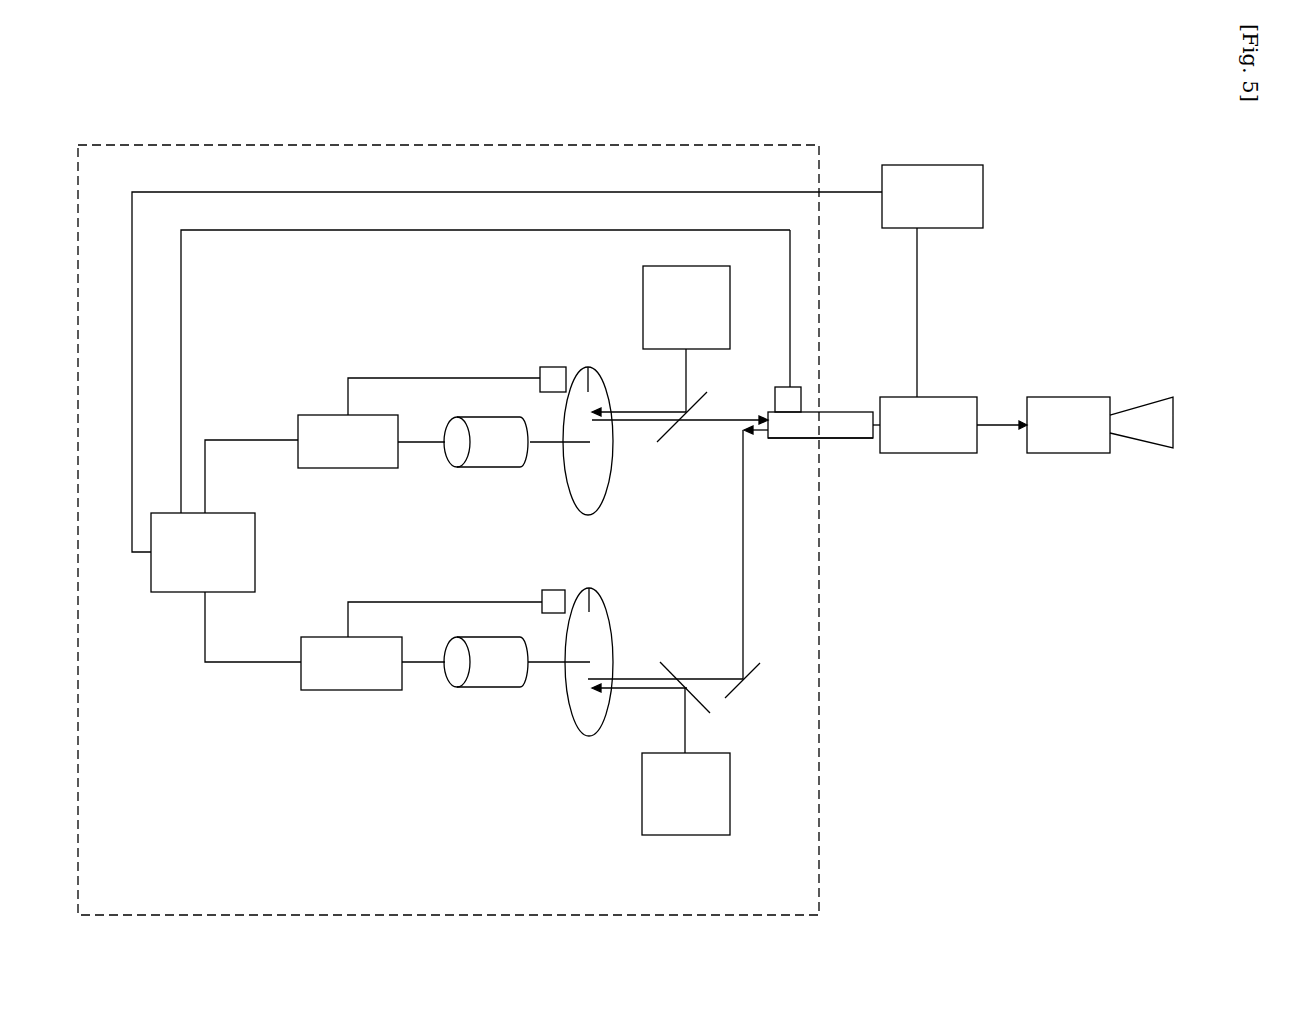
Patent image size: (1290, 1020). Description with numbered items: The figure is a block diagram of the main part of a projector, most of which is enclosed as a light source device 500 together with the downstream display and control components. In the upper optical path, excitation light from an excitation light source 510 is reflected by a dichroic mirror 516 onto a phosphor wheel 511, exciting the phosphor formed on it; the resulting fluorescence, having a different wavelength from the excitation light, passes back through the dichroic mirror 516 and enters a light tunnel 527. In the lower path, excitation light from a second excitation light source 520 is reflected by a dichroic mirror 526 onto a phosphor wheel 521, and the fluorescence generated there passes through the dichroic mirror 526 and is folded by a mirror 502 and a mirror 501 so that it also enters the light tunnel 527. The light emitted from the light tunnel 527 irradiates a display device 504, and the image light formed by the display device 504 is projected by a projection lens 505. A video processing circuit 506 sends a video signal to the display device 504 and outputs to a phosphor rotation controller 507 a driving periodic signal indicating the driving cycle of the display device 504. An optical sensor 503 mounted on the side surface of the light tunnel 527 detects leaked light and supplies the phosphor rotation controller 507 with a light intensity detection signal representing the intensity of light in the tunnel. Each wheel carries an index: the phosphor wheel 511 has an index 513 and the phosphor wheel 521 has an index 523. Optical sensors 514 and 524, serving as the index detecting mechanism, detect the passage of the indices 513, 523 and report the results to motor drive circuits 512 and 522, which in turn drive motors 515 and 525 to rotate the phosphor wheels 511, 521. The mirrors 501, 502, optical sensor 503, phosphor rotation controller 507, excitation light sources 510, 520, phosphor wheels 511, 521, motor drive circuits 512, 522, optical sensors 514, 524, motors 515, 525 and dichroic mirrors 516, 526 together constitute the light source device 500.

The light source device 500 is at (607, 145).
The mirror 501 is at (748, 430).
The mirror 502 is at (740, 690).
The optical sensor 503 is at (780, 387).
The display device 504 is at (897, 397).
The projection lens 505 is at (1065, 397).
The video processing circuit 506 is at (913, 165).
The phosphor rotation controller 507 is at (192, 593).
The excitation light source 510 is at (643, 310).
The phosphor wheel 511 is at (590, 515).
The motor drive circuit 512 is at (332, 415).
The index 513 is at (588, 367).
The optical sensor 514 is at (553, 367).
The motor 515 is at (488, 470).
The dichroic mirror 516 is at (660, 440).
The excitation light source 520 is at (685, 835).
The phosphor wheel 521 is at (588, 736).
The motor drive circuit 522 is at (347, 690).
The index 523 is at (589, 588).
The optical sensor 524 is at (553, 590).
The motor 525 is at (488, 690).
The dichroic mirror 526 is at (672, 667).
The light tunnel 527 is at (852, 438).